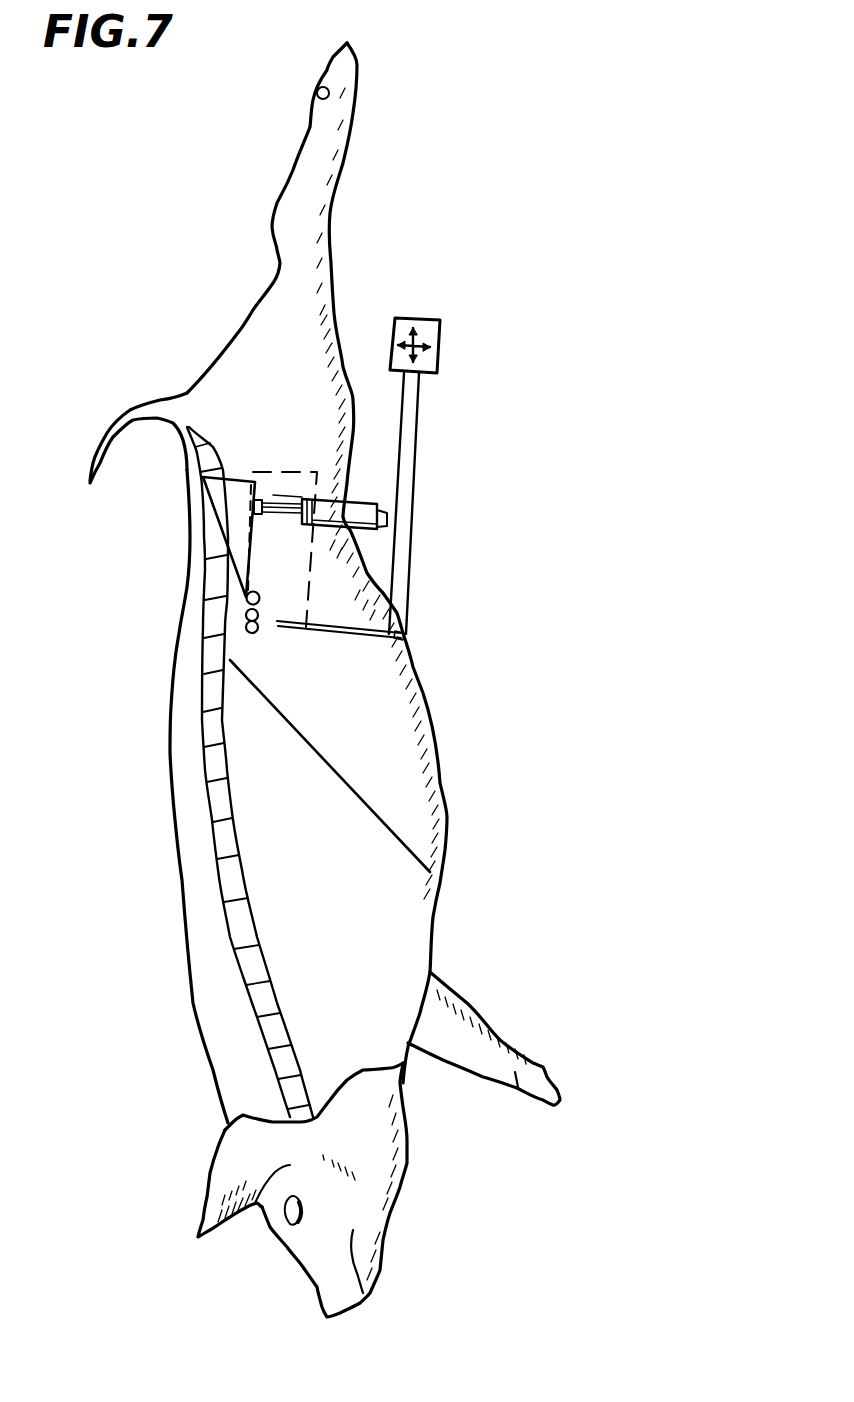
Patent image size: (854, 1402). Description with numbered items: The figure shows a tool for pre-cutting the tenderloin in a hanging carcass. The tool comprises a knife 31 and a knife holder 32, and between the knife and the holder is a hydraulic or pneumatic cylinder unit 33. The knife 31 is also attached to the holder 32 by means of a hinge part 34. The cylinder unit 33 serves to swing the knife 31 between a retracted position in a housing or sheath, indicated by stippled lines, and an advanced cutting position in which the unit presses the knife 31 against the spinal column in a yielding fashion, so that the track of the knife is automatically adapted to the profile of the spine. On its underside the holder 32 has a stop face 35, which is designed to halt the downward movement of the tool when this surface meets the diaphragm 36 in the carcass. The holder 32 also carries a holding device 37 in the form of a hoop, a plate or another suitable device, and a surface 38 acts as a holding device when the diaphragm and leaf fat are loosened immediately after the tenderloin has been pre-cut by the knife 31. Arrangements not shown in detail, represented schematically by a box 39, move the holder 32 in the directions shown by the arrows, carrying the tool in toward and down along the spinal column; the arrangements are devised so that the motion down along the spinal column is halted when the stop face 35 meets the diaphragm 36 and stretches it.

The knife 31 is at (227, 517).
The knife holder 32 is at (410, 470).
The hydraulic or pneumatic cylinder unit 33 is at (332, 500).
The hinge part 34 is at (260, 594).
The stop face 35 is at (255, 634).
The diaphragm 36 is at (343, 783).
The holding device 37 is at (404, 633).
The surface 38 is at (327, 633).
The box 39 is at (430, 330).